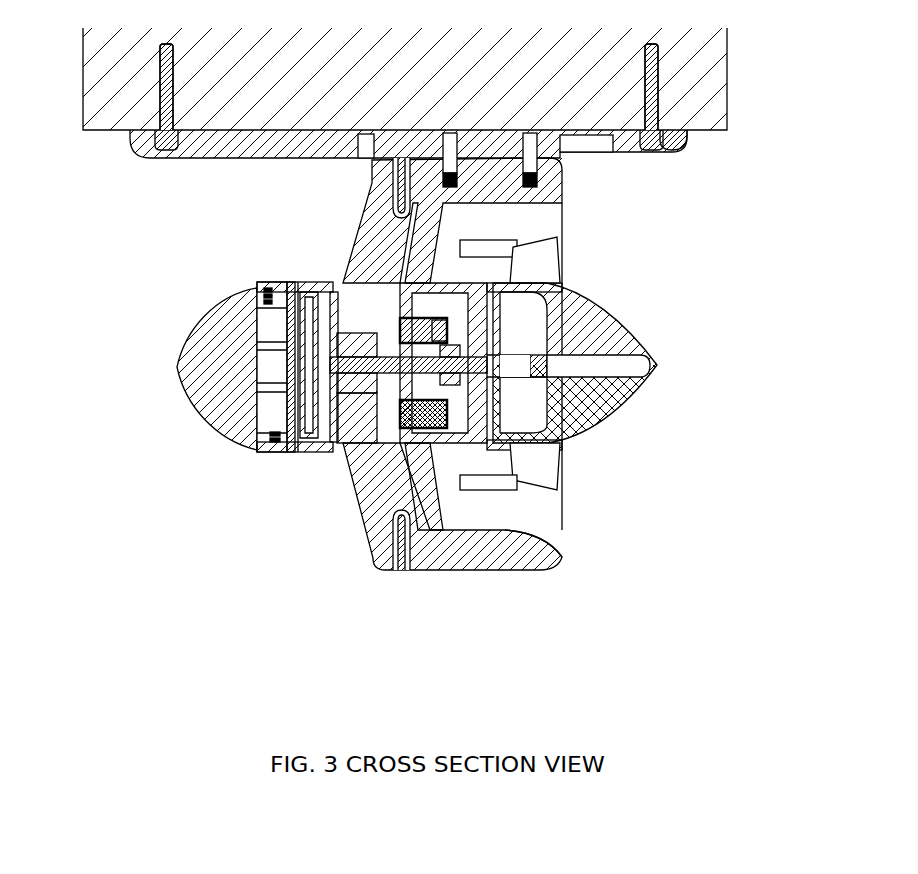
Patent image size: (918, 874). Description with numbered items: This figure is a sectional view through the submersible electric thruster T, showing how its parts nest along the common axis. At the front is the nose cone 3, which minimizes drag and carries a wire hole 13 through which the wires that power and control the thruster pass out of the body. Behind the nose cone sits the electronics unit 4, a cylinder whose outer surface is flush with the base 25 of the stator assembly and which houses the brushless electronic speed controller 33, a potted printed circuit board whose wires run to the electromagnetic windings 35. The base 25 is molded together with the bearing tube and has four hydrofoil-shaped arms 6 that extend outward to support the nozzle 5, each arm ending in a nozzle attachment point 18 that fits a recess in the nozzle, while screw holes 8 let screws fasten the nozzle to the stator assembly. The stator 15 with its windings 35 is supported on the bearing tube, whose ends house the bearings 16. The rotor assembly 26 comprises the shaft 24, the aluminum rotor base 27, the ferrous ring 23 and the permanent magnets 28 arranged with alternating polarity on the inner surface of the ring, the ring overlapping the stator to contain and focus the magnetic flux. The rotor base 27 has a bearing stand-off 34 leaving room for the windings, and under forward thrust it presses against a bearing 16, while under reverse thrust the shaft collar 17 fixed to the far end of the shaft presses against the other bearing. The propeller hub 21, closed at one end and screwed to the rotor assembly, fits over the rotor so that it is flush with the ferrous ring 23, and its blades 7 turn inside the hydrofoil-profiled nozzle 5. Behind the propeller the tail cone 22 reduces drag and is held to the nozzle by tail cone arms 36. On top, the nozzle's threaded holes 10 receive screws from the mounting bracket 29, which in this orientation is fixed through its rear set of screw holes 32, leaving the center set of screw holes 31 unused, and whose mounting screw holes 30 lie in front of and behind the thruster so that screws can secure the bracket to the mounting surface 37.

The nose cone 3 is at (192, 369).
The electronics unit 4 is at (260, 392).
The nozzle 5 is at (628, 363).
The arms 6 is at (388, 220).
The blades 7 is at (452, 561).
The screw holes 8 is at (368, 578).
The threaded holes 10 is at (510, 171).
The wire hole 13 is at (201, 363).
The stator 15 is at (543, 341).
The bearings 16 is at (485, 433).
The shaft collar 17 is at (282, 420).
The nozzle attachment point 18 is at (329, 190).
The hub 21 is at (587, 575).
The tail cone 22 is at (591, 325).
The ferrous ring 23 is at (595, 513).
The shaft 24 is at (611, 416).
The base 25 is at (322, 502).
The rotor assembly 26 is at (549, 563).
The rotor base 27 is at (530, 423).
The permanent magnets 28 is at (597, 495).
The mounting bracket 29 is at (408, 163).
The mounting screw holes 30 is at (435, 120).
The center set of screw holes 31 is at (330, 167).
The rear set of screw holes 32 is at (635, 164).
The brushless electronic speed controller 33 is at (229, 344).
The bearing stand-off 34 is at (546, 359).
The electromagnetic windings 35 is at (547, 357).
The tail cone arms 36 is at (615, 249).
The mounting surface 37 is at (440, 79).
The submersible electric thruster T is at (137, 646).